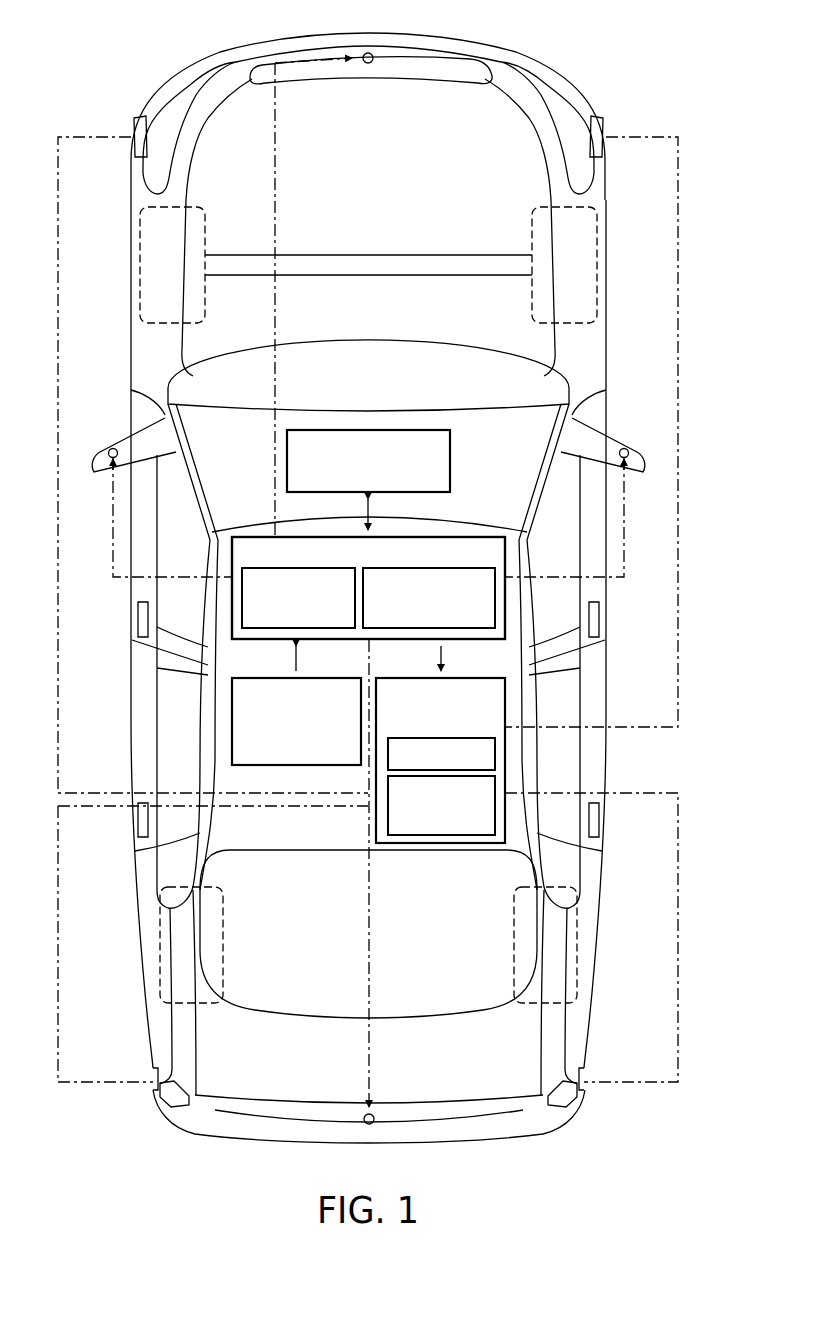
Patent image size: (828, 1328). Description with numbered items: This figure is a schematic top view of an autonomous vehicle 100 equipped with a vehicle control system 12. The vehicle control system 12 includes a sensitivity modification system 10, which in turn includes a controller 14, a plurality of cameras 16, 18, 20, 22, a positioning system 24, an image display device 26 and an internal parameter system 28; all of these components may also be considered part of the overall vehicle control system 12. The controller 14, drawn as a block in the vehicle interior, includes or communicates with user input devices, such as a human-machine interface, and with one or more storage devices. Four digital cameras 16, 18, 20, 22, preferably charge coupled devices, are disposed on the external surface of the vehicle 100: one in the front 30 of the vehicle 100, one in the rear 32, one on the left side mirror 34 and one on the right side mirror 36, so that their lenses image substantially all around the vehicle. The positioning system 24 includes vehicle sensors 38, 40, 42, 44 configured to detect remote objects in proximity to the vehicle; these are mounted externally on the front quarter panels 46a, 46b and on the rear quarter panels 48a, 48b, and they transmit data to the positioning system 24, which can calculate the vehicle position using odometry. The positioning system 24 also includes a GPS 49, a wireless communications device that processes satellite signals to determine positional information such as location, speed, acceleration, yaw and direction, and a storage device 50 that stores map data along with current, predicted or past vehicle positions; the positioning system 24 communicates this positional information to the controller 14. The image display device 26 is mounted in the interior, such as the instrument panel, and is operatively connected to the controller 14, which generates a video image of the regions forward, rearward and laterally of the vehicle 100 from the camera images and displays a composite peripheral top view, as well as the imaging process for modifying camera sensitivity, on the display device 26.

The autonomous vehicle 100 is at (636, 96).
The sensitivity modification system 10 is at (476, 502).
The vehicle control system 12 is at (243, 498).
The controller 14 is at (277, 642).
The camera 16 is at (372, 55).
The camera 18 is at (362, 1122).
The camera 20 is at (640, 470).
The camera 22 is at (98, 470).
The positioning system 24 is at (469, 775).
The image display device 26 is at (343, 430).
The internal parameter system 28 is at (232, 738).
The front of the vehicle 30 is at (468, 42).
The rear of the vehicle 32 is at (455, 1140).
The left side mirror 34 is at (102, 447).
The right side mirror 36 is at (636, 447).
The vehicle sensor 38 is at (606, 148).
The vehicle sensor 40 is at (132, 148).
The vehicle sensor 42 is at (578, 1105).
The vehicle sensor 44 is at (163, 1105).
The front quarter panel 46a is at (592, 107).
The front quarter panel 46b is at (147, 107).
The rear quarter panel 48a is at (588, 1055).
The rear quarter panel 48b is at (149, 1055).
The GPS 49 is at (495, 752).
The storage device 50 is at (415, 835).